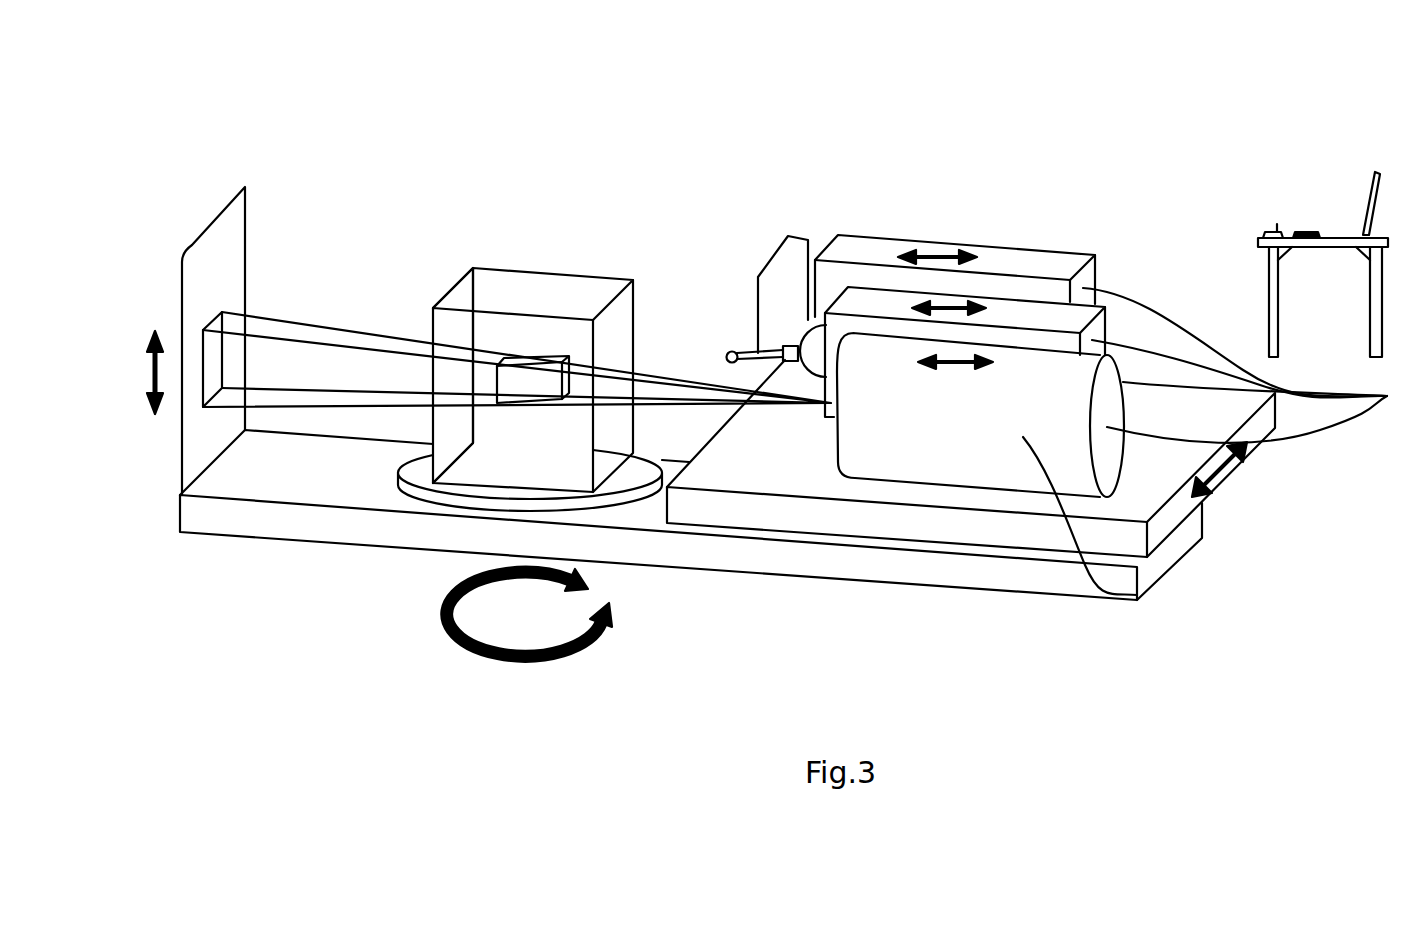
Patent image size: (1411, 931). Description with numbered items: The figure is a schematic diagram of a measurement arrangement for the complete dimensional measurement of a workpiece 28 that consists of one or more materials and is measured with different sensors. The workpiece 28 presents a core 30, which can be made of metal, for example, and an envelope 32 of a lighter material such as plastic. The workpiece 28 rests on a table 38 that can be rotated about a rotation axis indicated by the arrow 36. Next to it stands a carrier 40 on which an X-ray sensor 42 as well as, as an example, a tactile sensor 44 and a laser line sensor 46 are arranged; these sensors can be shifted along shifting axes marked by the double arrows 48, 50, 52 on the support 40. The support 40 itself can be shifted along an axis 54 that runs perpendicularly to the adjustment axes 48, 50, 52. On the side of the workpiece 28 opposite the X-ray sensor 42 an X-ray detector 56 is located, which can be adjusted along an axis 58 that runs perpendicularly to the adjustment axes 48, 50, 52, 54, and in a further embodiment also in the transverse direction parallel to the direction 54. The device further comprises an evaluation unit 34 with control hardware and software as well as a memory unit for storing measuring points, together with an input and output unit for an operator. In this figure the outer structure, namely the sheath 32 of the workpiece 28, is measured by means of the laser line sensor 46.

The workpiece 28 is at (610, 290).
The core 30 is at (523, 380).
The envelope 32 is at (473, 298).
The evaluation unit 34 is at (1300, 230).
The arrow 36 is at (577, 645).
The table 38 is at (500, 503).
The carrier 40 is at (940, 497).
The X-ray sensor 42 is at (1153, 582).
The tactile sensor 44 is at (873, 308).
The laser line sensor 46 is at (852, 248).
The double arrow 48 is at (982, 350).
The double arrow 50 is at (953, 303).
The double arrow 52 is at (935, 252).
The axis 54 is at (1223, 470).
The X-ray detector 56 is at (225, 253).
The axis 58 is at (150, 377).